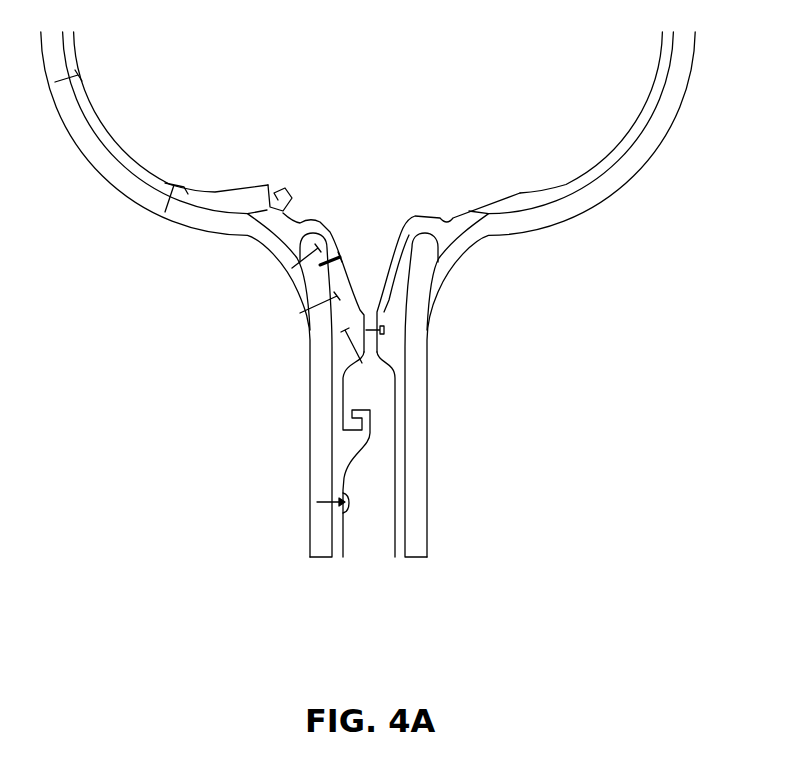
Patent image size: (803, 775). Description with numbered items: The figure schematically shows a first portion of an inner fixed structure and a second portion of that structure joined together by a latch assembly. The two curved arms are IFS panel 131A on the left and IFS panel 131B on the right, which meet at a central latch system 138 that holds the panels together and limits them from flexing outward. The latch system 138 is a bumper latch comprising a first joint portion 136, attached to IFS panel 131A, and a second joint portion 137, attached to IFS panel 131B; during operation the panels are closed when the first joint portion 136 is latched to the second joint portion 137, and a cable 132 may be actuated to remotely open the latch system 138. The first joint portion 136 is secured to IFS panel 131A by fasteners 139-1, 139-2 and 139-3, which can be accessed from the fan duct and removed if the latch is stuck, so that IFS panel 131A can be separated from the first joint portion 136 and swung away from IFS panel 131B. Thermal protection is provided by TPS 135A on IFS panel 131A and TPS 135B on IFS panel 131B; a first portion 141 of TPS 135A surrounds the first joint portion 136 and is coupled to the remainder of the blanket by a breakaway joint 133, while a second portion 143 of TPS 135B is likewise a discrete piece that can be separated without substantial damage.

The IFS panel 131A is at (141, 207).
The IFS panel 131B is at (597, 203).
The cable 132 is at (393, 523).
The breakaway joint 133 is at (271, 180).
The thermal protection system 135A is at (215, 191).
The thermal protection system 135B is at (520, 191).
The first joint portion 136 is at (300, 297).
The second joint portion 137 is at (405, 303).
The latch system 138 is at (362, 278).
The fastener 139-1 is at (290, 268).
The fastener 139-2 is at (300, 313).
The fastener 139-3 is at (352, 347).
The first portion 141 is at (337, 240).
The second portion 143 is at (404, 232).